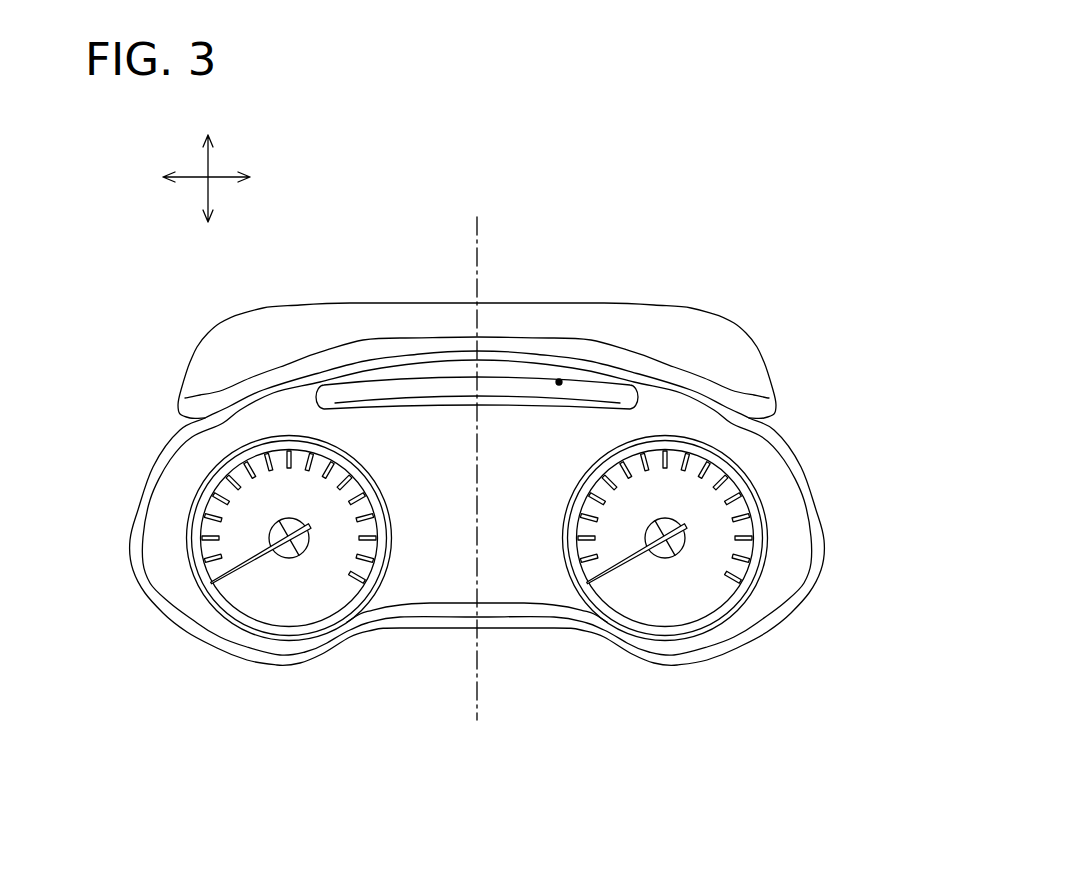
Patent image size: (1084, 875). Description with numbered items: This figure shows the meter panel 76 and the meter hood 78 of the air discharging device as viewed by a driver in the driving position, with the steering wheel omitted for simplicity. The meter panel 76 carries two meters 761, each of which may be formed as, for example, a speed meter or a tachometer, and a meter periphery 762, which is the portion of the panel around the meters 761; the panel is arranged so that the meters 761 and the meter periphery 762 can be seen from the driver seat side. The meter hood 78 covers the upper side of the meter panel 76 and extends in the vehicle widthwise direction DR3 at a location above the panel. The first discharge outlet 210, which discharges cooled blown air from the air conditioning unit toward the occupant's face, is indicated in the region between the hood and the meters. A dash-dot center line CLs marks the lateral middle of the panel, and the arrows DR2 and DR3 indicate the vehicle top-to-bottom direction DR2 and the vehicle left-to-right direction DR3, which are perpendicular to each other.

The meter panel 76 is at (783, 506).
The meters 761 is at (230, 512).
The meter periphery 762 is at (523, 570).
The meter hood 78 is at (747, 362).
The first discharge outlet 210 is at (559, 382).
The center line CLs is at (477, 237).
The vehicle top-to-bottom direction DR2 is at (208, 155).
The vehicle left-to-right direction DR3 is at (223, 177).